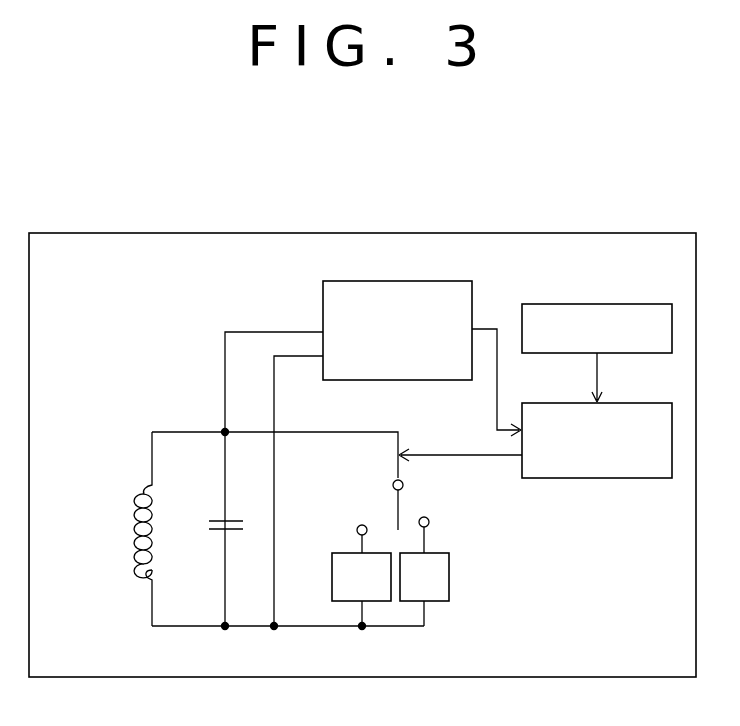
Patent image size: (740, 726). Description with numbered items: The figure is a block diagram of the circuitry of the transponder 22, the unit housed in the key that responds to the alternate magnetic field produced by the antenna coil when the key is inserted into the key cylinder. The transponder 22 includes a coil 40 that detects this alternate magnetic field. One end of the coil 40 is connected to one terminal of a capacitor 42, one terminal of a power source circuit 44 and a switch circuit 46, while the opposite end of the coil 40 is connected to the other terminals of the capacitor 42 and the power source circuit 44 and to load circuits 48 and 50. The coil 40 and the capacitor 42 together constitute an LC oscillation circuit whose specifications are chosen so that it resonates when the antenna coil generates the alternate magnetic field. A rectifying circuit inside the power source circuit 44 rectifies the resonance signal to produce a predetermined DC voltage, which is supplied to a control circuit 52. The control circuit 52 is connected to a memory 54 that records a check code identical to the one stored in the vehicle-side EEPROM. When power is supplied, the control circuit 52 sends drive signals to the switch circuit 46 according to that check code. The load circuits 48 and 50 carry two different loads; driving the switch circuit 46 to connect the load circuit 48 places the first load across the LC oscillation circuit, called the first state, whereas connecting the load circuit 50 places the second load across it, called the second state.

The transponder 22 is at (298, 229).
The coil 40 is at (140, 560).
The capacitor 42 is at (218, 532).
The power source circuit 44 is at (371, 280).
The switch circuit 46 is at (397, 510).
The load circuit 48 is at (332, 570).
The load circuit 50 is at (449, 575).
The control circuit 52 is at (593, 478).
The memory 54 is at (596, 304).